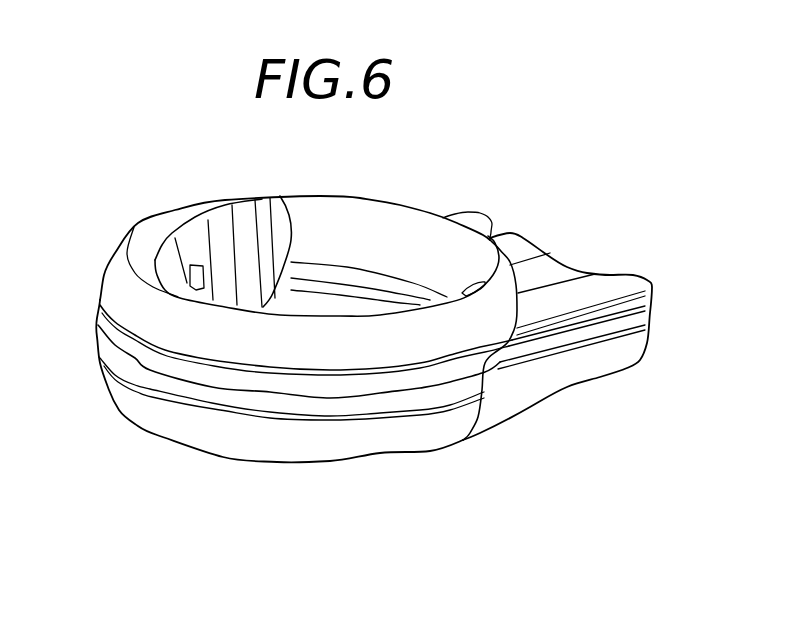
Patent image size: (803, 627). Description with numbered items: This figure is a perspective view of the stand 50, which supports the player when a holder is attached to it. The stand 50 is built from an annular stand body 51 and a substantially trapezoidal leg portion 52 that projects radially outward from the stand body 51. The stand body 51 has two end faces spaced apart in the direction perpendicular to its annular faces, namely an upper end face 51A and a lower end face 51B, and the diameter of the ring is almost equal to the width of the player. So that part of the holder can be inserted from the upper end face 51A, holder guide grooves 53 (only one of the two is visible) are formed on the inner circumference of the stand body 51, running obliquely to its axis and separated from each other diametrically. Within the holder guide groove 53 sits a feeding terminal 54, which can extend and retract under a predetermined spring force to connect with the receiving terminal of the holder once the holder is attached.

The stand 50 is at (160, 446).
The stand body 51 is at (347, 337).
The end face 51A is at (143, 244).
The end face 51B is at (427, 453).
The leg portion 52 is at (577, 364).
The holder guide groove 53 is at (264, 240).
The feeding terminal 54 is at (203, 263).